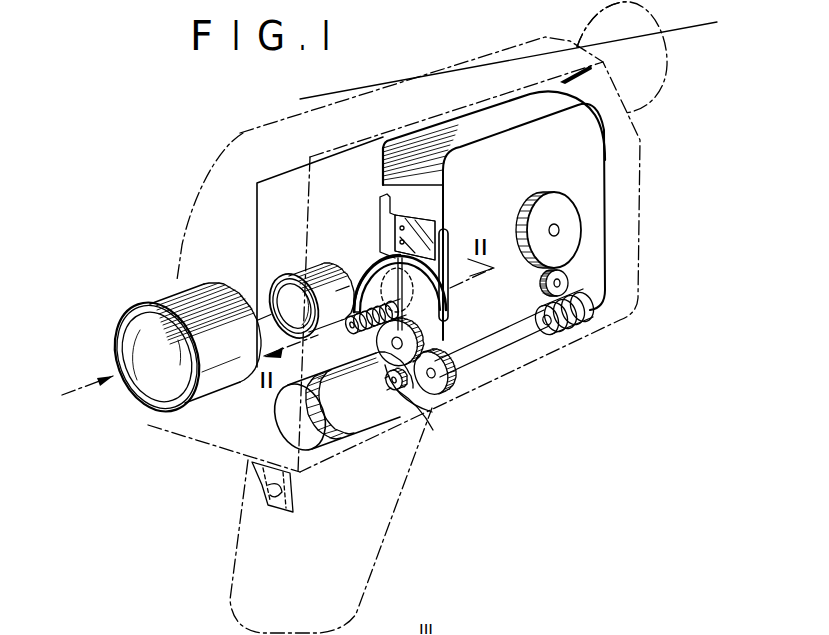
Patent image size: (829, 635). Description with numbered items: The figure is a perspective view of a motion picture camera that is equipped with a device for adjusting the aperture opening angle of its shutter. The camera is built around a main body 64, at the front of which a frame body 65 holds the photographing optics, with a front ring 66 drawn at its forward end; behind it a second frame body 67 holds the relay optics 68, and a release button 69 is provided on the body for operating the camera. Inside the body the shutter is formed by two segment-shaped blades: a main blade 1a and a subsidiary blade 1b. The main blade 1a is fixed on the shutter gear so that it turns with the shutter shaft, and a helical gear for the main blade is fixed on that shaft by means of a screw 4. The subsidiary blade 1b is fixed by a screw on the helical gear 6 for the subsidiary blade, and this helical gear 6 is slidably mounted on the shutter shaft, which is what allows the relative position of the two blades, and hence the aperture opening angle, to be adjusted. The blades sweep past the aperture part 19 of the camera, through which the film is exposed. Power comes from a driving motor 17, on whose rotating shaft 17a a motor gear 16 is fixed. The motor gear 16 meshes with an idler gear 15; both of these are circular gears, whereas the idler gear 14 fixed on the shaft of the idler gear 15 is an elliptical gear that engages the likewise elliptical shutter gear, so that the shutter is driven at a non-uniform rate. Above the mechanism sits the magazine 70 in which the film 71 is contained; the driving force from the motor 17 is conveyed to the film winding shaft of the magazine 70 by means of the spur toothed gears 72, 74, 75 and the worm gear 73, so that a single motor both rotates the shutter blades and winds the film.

The main blade 1a is at (443, 287).
The subsidiary blade 1b is at (432, 304).
The screw 4 is at (378, 331).
The helical gear for the subsidiary blade 6 is at (362, 284).
The idler gear 14 is at (412, 390).
The idler gear 15 is at (420, 342).
The motor gear 16 is at (436, 412).
The driving motor 17 is at (365, 412).
The rotating shaft 17a is at (398, 405).
The aperture part 19 is at (407, 213).
The main body 64 is at (515, 48).
The frame body 65 is at (188, 299).
The front lens ring 66 is at (153, 340).
The frame body 67 is at (298, 280).
The relay optics 68 is at (283, 290).
The release button 69 is at (262, 480).
The magazine 70 is at (455, 132).
The film 71 is at (405, 215).
The spur toothed gear 72 is at (450, 382).
The worm gear 73 is at (583, 328).
The spur toothed gear 74 is at (572, 276).
The spur toothed gear 75 is at (577, 214).